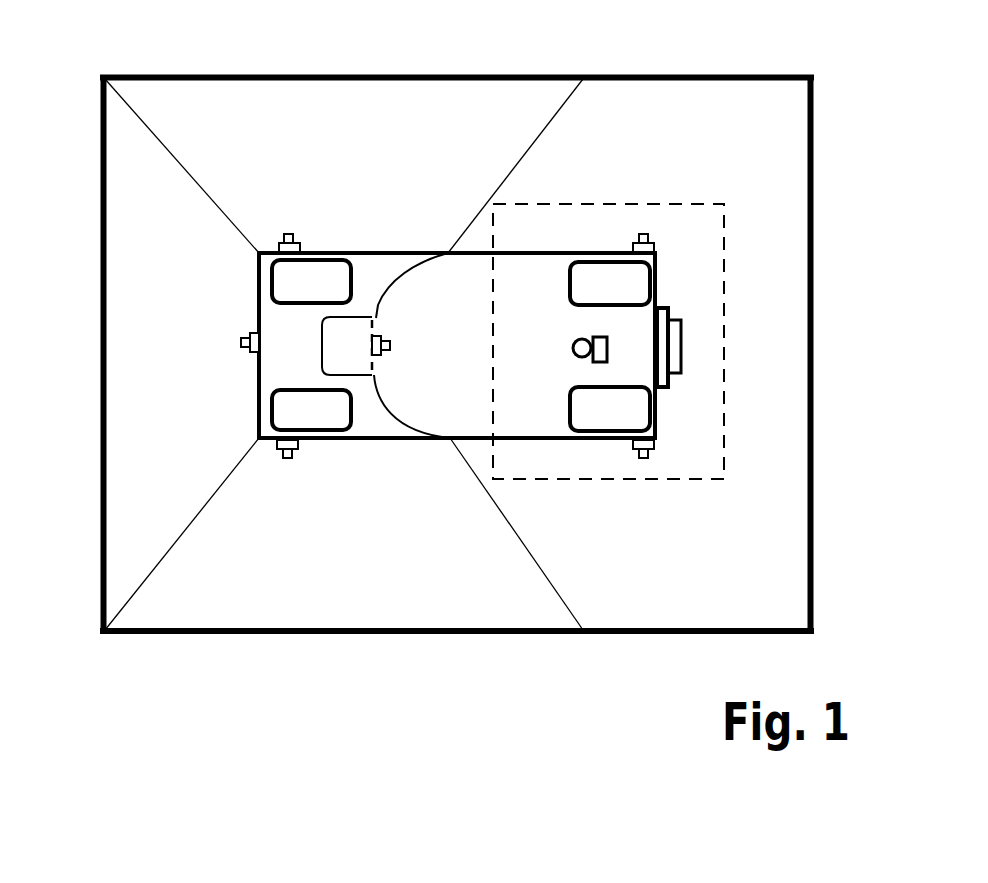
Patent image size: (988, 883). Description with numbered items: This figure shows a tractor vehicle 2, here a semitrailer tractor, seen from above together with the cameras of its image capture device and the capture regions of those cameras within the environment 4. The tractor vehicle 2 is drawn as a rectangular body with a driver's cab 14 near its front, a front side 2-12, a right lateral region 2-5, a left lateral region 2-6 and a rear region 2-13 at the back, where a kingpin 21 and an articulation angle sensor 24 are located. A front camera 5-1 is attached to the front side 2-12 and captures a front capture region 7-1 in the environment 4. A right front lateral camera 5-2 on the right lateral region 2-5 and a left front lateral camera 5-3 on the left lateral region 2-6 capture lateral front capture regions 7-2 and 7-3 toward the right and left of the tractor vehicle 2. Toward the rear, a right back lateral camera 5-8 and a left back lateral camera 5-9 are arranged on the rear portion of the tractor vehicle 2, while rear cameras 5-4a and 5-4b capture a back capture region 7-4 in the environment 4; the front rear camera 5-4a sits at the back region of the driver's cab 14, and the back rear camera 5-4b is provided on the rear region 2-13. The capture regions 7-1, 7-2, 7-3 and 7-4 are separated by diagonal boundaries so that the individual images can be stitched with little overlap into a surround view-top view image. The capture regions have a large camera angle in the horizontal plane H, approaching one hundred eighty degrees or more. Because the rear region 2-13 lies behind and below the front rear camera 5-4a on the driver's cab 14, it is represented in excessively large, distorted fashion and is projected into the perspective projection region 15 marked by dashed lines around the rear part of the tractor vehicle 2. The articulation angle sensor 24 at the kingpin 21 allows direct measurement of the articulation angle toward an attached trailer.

The tractor vehicle 2 is at (523, 252).
The right lateral region of the tractor vehicle 2-5 is at (405, 249).
The left lateral region of the tractor vehicle 2-6 is at (407, 440).
The front side of the tractor vehicle 2-12 is at (252, 298).
The rear region of the tractor vehicle 2-13 is at (663, 433).
The environment 4 is at (813, 553).
The front camera 5-1 is at (247, 340).
The right front lateral camera 5-2 is at (300, 245).
The left front lateral camera 5-3 is at (297, 450).
The front rear camera 5-4a is at (385, 337).
The back rear camera 5-4b is at (672, 390).
The right back lateral camera of the tractor vehicle 5-8 is at (647, 242).
The left back lateral camera of the tractor vehicle 5-9 is at (643, 452).
The front capture region 7-1 is at (125, 331).
The right lateral front capture region 7-2 is at (388, 102).
The left lateral front capture region 7-3 is at (353, 587).
The back capture region 7-4 is at (795, 187).
The driver's cab 14 is at (305, 353).
The perspective projection region 15 is at (704, 200).
The kingpin 21 is at (575, 340).
The articulation angle sensor 24 is at (610, 333).
The horizontal plane H is at (905, 425).